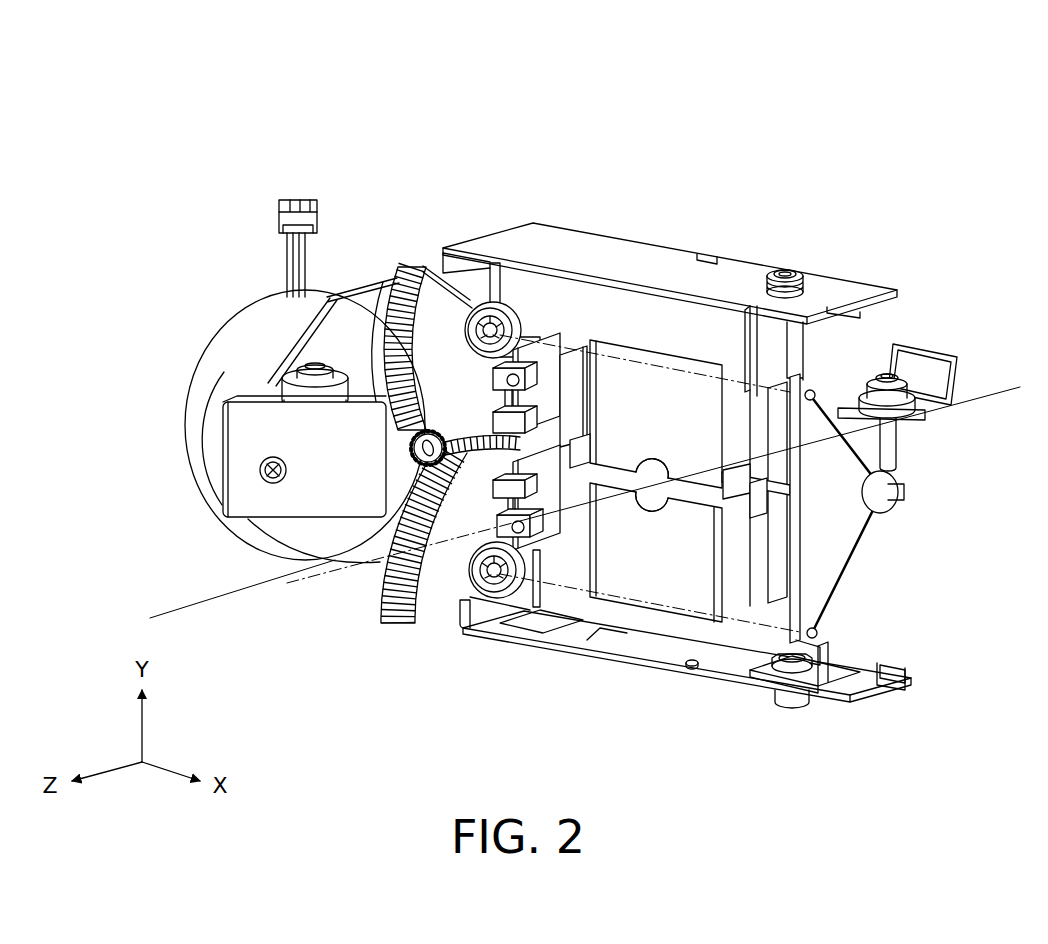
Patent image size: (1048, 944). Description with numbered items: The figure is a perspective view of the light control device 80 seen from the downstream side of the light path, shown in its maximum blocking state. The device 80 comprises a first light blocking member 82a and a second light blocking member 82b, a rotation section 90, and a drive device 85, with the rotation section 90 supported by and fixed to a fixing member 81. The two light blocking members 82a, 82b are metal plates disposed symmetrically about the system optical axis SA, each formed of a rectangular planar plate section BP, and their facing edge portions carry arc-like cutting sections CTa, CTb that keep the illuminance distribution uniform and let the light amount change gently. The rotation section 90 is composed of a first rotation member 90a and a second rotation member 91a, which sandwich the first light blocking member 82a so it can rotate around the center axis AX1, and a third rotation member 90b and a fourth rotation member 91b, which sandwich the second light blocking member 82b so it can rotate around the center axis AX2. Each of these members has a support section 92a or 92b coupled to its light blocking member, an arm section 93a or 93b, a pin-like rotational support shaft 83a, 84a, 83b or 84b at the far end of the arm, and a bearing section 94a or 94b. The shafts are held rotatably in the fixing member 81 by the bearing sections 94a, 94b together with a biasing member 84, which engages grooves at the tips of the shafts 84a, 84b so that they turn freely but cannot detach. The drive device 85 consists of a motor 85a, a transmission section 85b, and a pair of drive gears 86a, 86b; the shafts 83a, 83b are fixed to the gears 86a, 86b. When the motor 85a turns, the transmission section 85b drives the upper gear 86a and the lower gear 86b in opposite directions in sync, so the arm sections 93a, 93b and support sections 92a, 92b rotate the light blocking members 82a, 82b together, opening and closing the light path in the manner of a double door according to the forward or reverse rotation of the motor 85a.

The light control device 80 is at (408, 128).
The fixing member 81 is at (832, 298).
The first light blocking member 82a is at (645, 360).
The second light blocking member 82b is at (660, 622).
The rotational support shaft 83a is at (482, 320).
The rotational support shaft 83b is at (485, 632).
The biasing member 84 is at (852, 572).
The rotational support shaft 84a is at (835, 398).
The rotational support shaft 84b is at (812, 640).
The drive device 85 is at (226, 302).
The motor 85a is at (218, 370).
The transmission section 85b is at (345, 560).
The drive gear 86a is at (428, 312).
The drive gear 86b is at (445, 628).
The rotation section 90 is at (545, 292).
The first rotation member 90a is at (478, 385).
The third rotation member 90b is at (470, 542).
The second rotation member 91a is at (745, 368).
The fourth rotation member 91b is at (737, 593).
The first support section 92a is at (592, 440).
The second support section 92b is at (583, 482).
The first arm section 93a is at (577, 380).
The second arm section 93b is at (570, 600).
The bearing section 94a is at (810, 402).
The bearing section 94b is at (812, 628).
The center axis AX1 is at (500, 318).
The center axis AX2 is at (508, 640).
The plate section BP is at (655, 360).
The cutting section CTa is at (654, 462).
The cutting section CTb is at (654, 505).
The system optical axis SA is at (255, 600).